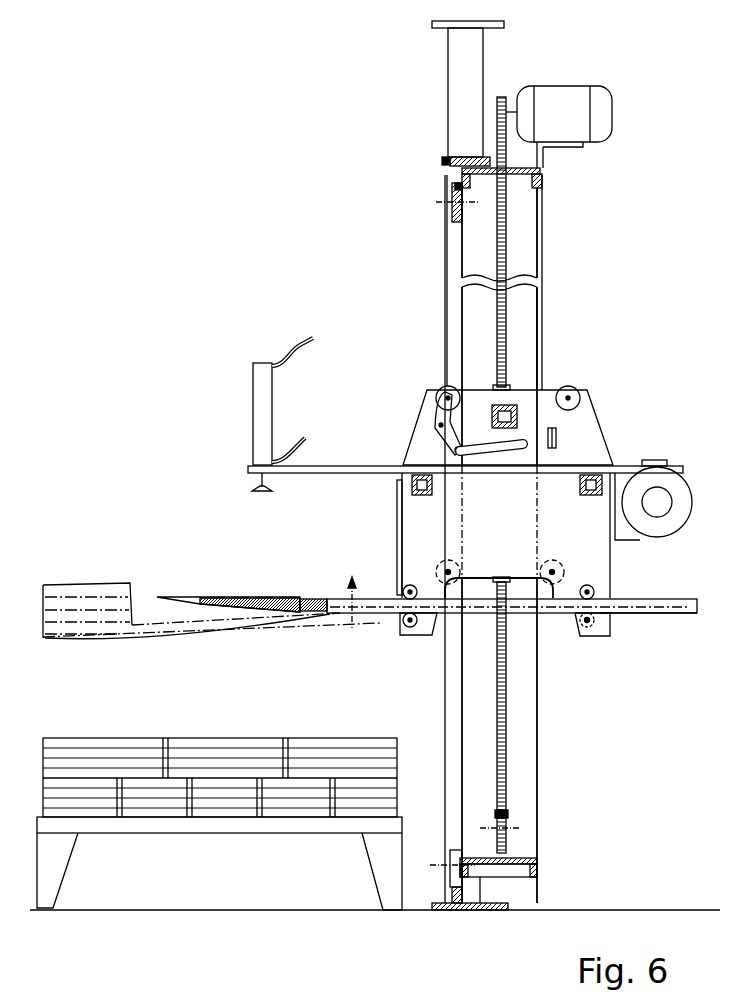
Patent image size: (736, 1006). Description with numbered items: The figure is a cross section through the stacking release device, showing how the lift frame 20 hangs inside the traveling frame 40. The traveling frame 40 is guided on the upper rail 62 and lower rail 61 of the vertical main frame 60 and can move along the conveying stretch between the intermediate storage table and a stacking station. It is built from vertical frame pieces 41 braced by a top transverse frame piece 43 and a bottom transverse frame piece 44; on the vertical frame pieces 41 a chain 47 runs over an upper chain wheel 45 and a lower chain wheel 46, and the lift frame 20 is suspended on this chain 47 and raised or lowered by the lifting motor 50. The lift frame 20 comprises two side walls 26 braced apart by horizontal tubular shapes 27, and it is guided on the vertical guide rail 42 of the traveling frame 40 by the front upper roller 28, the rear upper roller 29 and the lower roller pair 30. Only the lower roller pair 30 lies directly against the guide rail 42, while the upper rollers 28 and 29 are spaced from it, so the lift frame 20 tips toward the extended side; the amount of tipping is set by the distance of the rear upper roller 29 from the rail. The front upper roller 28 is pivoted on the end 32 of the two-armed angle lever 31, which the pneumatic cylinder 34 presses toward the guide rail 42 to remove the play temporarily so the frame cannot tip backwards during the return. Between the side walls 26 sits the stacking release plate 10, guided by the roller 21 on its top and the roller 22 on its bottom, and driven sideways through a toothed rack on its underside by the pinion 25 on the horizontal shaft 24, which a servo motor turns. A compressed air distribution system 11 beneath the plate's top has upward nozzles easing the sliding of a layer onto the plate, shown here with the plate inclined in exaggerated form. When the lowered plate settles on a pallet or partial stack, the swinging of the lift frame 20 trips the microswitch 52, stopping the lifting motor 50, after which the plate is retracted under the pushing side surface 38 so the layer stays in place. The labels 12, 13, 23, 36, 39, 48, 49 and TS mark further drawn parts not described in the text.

The stacking release plate 10 is at (344, 589).
The compressed air distribution system 11 is at (213, 598).
The stack of sheets on tray 12 is at (265, 597).
The rail 13 is at (650, 613).
The lift frame 20 is at (604, 417).
The roller 21 is at (405, 590).
The roller 22 is at (410, 628).
The guide roller 23 is at (595, 592).
The horizontal shaft 24 is at (580, 624).
The pinion 25 is at (595, 637).
The side wall 26 is at (598, 455).
The horizontal tubular shape 27 is at (515, 406).
The front upper roller 28 is at (441, 388).
The rear upper roller 29 is at (574, 388).
The lower roller pair 30 is at (448, 559).
The two-armed angle lever 31 is at (445, 440).
The end of angle lever 32 is at (438, 420).
The pneumatic cylinder 34 is at (490, 452).
The post 36 is at (265, 394).
The pushing side surface 38 is at (400, 505).
The drive motor 39 is at (684, 492).
The traveling frame 40 is at (543, 231).
The vertical frame piece 41 is at (531, 778).
The vertical guide rail 42 is at (540, 308).
The top bracing transverse frame piece 43 is at (528, 175).
The bottom bracing transverse frame piece 44 is at (540, 860).
The upper chain wheel 45 is at (501, 96).
The lower chain wheel 46 is at (507, 814).
The chain 47 is at (506, 690).
The bracket 48 is at (455, 207).
The bracket 49 is at (452, 862).
The lifting motor 50 is at (583, 92).
The microswitch 52 is at (558, 440).
The vertical main frame 60 is at (446, 49).
The lower rail 61 is at (456, 910).
The upper rail 62 is at (442, 163).
The table with stack TS is at (397, 740).